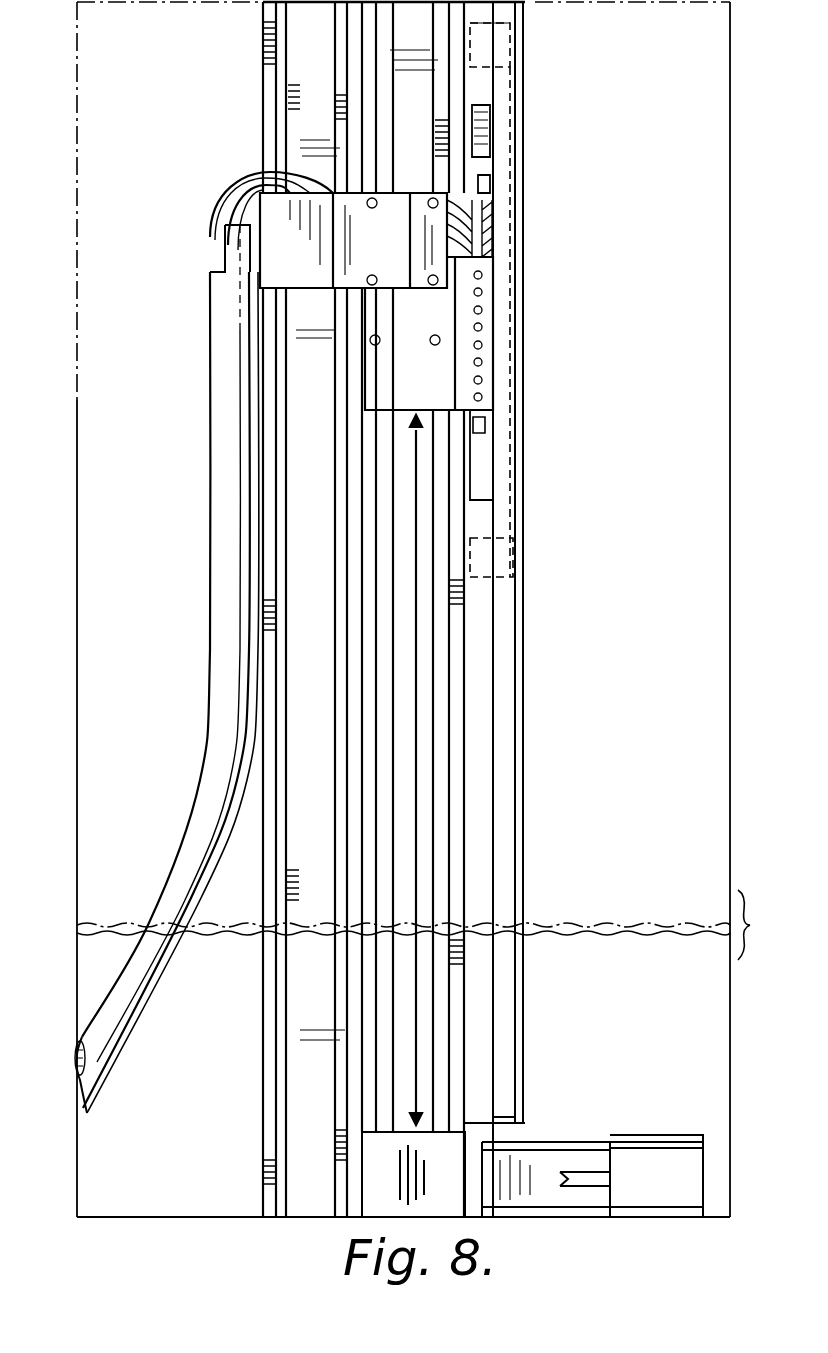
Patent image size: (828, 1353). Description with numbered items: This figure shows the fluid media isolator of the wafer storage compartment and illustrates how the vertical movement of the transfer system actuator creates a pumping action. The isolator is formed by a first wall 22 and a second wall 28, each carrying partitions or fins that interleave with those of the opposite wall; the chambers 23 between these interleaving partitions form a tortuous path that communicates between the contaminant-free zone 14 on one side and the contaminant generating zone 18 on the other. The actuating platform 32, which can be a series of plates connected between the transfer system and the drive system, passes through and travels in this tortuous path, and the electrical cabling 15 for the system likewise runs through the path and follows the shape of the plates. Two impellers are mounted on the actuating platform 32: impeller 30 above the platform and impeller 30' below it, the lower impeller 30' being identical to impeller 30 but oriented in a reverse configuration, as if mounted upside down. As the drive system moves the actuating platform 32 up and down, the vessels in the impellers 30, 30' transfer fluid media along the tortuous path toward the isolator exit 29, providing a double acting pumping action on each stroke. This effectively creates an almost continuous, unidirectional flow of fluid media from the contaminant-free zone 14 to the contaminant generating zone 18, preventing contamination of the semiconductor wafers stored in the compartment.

The contaminant-free zone 14 is at (635, 548).
The electrical cabling 15 is at (238, 185).
The contaminant generating zone 18 is at (152, 548).
The first wall 22 is at (458, 37).
The chambers 23 is at (287, 120).
The second wall 28 is at (264, 18).
The isolator exit 29 is at (468, 159).
The impeller 30 is at (505, 609).
The impeller 30' is at (579, 1111).
The actuating platform 32 is at (452, 367).